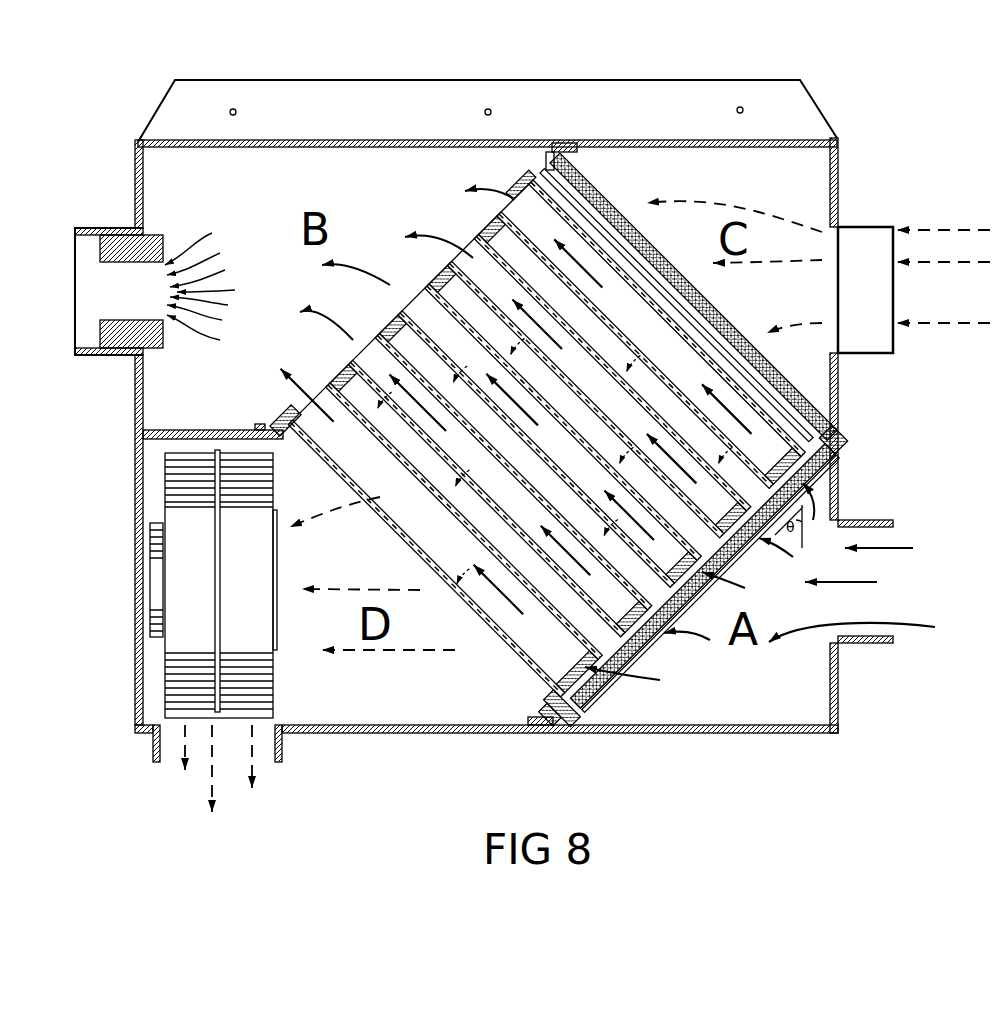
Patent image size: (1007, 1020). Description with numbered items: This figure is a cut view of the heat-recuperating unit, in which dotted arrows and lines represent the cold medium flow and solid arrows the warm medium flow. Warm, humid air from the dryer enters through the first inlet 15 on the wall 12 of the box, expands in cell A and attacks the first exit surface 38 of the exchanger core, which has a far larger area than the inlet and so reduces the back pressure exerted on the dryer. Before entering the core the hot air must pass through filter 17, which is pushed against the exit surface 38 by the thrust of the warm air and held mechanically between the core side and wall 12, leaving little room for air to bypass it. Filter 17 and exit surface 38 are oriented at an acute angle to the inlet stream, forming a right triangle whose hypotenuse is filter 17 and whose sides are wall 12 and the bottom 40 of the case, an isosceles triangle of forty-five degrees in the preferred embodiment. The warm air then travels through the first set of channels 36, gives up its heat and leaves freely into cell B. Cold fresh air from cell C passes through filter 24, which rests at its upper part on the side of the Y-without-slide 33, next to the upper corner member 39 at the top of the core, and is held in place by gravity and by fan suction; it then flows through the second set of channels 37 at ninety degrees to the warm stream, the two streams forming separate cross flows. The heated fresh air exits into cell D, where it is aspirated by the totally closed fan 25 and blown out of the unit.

The right side wall 12 is at (842, 702).
The first inlet 15 is at (870, 615).
The filter 17 is at (582, 697).
The filter 24 is at (807, 382).
The fan 25 is at (193, 560).
The Y-without-slide 33 is at (537, 170).
The first set of channels 36 is at (787, 461).
The second set of channels 37 is at (793, 406).
The first exit surface 38 is at (800, 490).
The end plate 39 is at (522, 193).
The bottom 40 is at (727, 733).